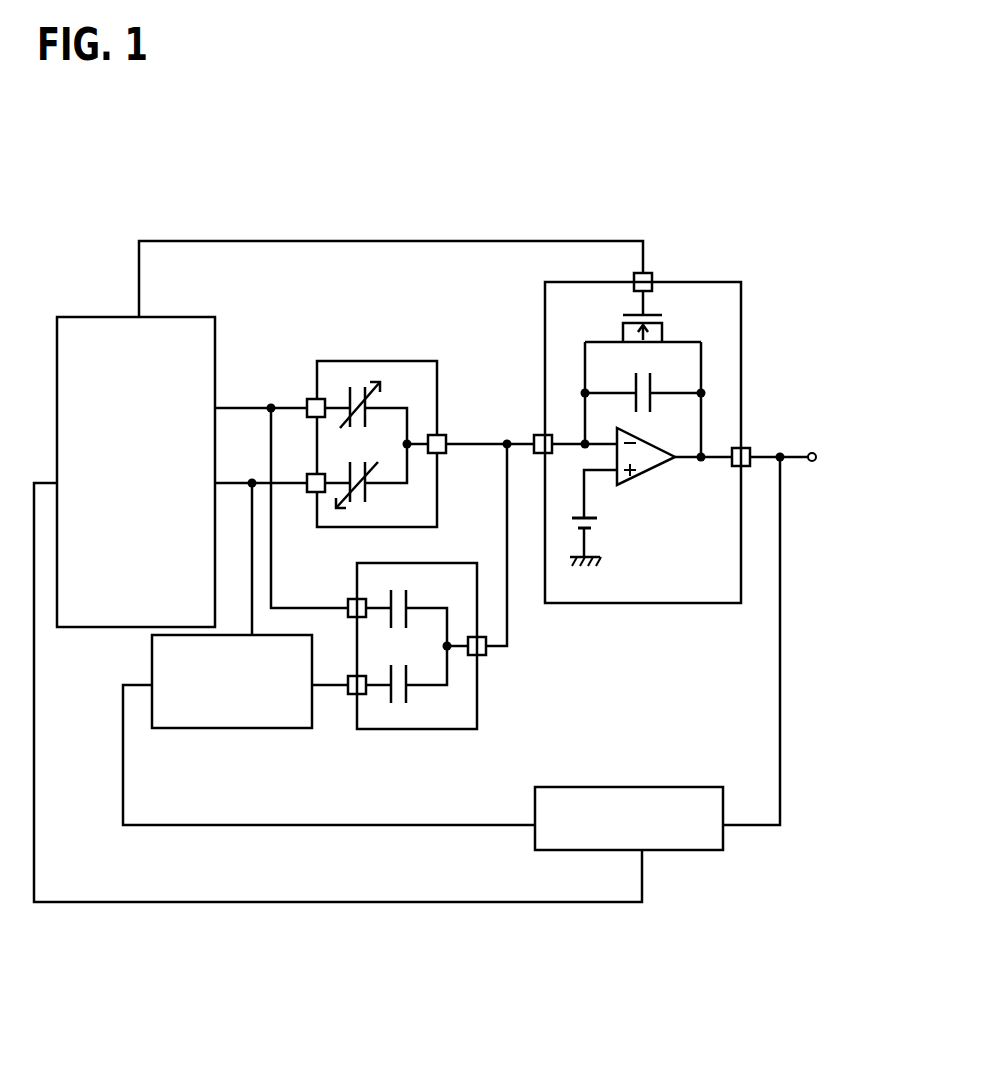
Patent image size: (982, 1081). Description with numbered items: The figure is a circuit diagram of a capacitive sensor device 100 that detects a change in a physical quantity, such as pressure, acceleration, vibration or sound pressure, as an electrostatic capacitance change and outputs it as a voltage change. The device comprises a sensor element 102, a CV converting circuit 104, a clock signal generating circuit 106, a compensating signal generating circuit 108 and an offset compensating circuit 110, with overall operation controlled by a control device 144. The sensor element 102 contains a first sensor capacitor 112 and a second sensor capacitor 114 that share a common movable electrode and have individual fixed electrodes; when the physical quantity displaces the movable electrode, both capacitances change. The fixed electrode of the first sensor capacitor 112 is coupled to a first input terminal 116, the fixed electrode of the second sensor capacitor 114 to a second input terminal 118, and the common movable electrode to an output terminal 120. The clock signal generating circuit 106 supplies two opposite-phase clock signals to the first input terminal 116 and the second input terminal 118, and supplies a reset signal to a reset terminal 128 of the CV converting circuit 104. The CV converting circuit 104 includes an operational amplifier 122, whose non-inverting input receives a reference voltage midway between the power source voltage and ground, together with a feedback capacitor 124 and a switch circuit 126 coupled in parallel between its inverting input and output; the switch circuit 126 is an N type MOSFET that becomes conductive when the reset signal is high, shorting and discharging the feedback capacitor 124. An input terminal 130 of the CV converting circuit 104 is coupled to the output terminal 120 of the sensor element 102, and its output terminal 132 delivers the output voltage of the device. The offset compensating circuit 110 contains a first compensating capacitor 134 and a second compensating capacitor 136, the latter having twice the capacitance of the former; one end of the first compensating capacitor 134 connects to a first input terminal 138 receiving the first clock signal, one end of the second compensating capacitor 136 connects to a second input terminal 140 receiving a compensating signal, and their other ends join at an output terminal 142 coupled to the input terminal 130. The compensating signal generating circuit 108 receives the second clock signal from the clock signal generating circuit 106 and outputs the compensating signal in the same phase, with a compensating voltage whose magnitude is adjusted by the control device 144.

The capacitive sensor device 100 is at (557, 186).
The sensor element 102 is at (388, 361).
The CV converting circuit 104 is at (708, 282).
The clock signal generating circuit 106 is at (88, 317).
The compensating signal generating circuit 108 is at (250, 728).
The offset compensating circuit 110 is at (410, 729).
The first sensor capacitor 112 is at (372, 400).
The second sensor capacitor 114 is at (372, 490).
The first input terminal 116 is at (311, 398).
The second input terminal 118 is at (312, 493).
The output terminal 120 is at (440, 434).
The operational amplifier 122 is at (644, 470).
The feedback capacitor 124 is at (634, 383).
The switch circuit 126 is at (656, 315).
The reset terminal 128 is at (647, 272).
The input terminal 130 is at (540, 434).
The output terminal 132 is at (745, 447).
The first compensating capacitor 134 is at (410, 602).
The second compensating capacitor 136 is at (410, 692).
The first input terminal 138 is at (350, 598).
The second input terminal 140 is at (352, 695).
The output terminal 142 is at (482, 656).
The control device 144 is at (662, 850).